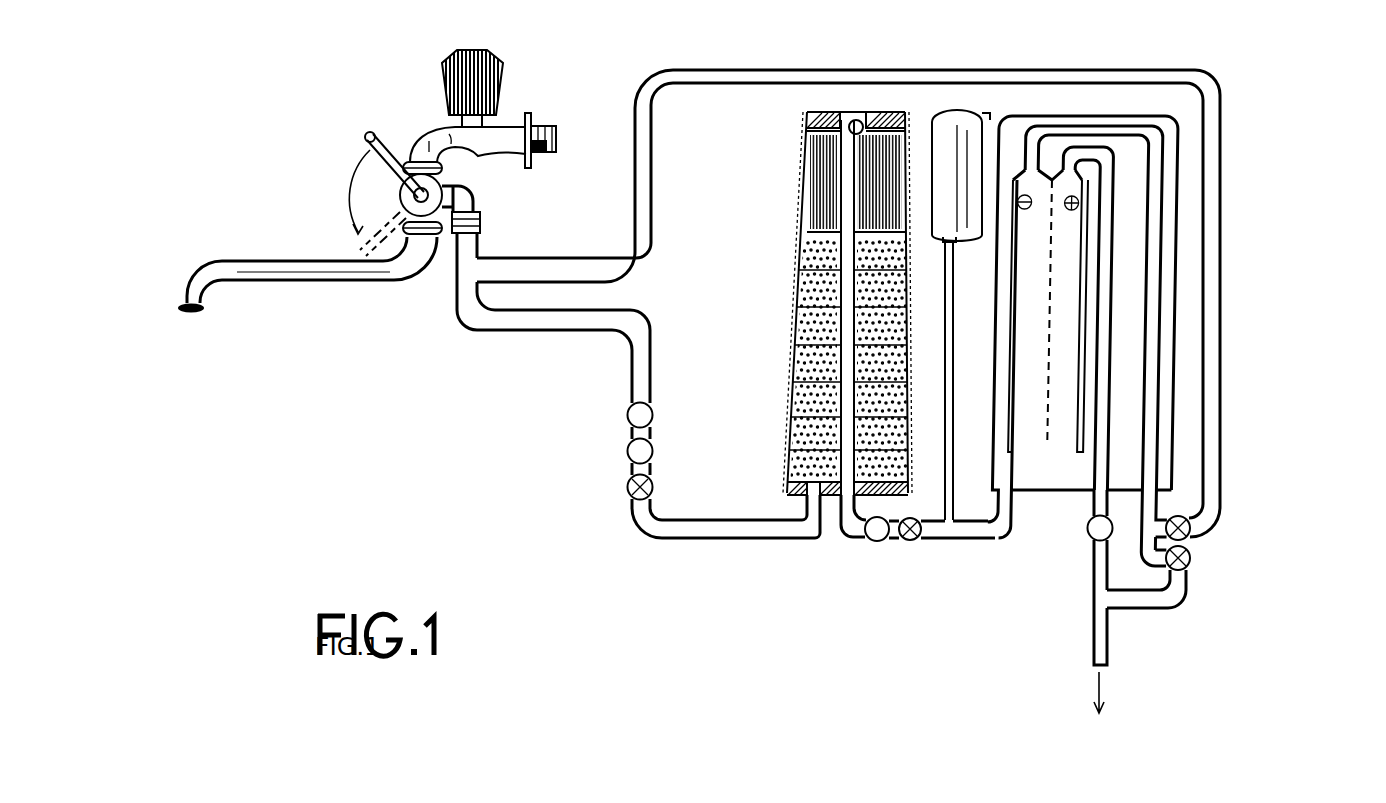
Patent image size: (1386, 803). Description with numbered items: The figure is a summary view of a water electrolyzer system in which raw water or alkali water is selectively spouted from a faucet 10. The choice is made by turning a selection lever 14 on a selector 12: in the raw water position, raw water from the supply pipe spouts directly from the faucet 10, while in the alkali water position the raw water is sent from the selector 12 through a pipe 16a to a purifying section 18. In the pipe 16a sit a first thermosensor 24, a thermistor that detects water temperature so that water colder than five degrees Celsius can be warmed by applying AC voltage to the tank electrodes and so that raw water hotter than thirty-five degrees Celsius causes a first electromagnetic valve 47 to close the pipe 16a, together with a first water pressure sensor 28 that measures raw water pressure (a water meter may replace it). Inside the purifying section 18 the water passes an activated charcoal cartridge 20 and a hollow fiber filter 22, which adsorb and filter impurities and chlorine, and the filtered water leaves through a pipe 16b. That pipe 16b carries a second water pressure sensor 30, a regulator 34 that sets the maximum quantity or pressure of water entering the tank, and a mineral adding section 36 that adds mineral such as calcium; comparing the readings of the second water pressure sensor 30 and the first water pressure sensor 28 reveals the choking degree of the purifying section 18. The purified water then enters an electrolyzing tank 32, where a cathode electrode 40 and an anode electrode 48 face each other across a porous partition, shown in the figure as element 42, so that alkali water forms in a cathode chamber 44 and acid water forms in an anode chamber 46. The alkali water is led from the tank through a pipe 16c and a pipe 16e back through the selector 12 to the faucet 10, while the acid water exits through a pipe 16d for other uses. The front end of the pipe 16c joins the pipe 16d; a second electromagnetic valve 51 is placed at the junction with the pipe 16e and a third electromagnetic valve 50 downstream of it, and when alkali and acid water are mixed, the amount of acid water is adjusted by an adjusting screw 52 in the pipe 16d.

The faucet 10 is at (185, 365).
The selector 12 is at (499, 209).
The selection lever 14 is at (295, 146).
The pipe 16a is at (377, 394).
The pipe 16b is at (930, 586).
The pipe 16c is at (1268, 244).
The pipe 16d is at (1013, 680).
The pipe 16e is at (750, 41).
The purifying section 18 is at (768, 266).
The activated charcoal cartridge 20 is at (744, 353).
The hollow fiber filter 22 is at (745, 162).
The first thermosensor 24 is at (557, 433).
The first water pressure sensor 28 is at (557, 483).
The second water pressure sensor 30 is at (760, 604).
The electrolyzing tank 32 is at (1097, 96).
The regulator 34 is at (845, 604).
The mineral adding section 36 is at (1004, 42).
The cathode electrode 40 is at (1268, 374).
The membrane 42 is at (1034, 546).
The cathode chamber 44 is at (1268, 187).
The anode chamber 46 is at (1268, 319).
The first electromagnetic valve 47 is at (570, 551).
The anode electrode 48 is at (1268, 154).
The third electromagnetic valve 50 is at (1266, 562).
The second electromagnetic valve 51 is at (1266, 484).
The adjusting screw 52 is at (1101, 535).